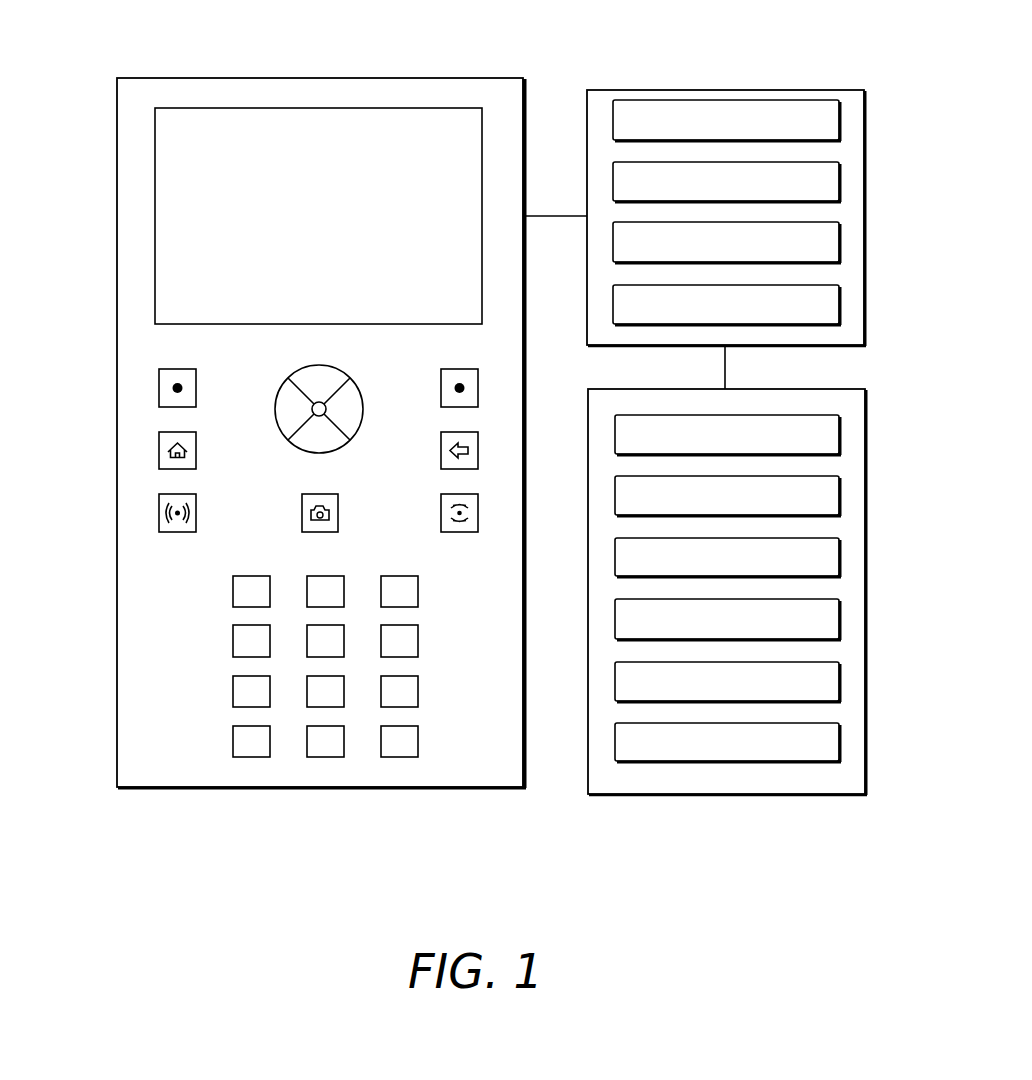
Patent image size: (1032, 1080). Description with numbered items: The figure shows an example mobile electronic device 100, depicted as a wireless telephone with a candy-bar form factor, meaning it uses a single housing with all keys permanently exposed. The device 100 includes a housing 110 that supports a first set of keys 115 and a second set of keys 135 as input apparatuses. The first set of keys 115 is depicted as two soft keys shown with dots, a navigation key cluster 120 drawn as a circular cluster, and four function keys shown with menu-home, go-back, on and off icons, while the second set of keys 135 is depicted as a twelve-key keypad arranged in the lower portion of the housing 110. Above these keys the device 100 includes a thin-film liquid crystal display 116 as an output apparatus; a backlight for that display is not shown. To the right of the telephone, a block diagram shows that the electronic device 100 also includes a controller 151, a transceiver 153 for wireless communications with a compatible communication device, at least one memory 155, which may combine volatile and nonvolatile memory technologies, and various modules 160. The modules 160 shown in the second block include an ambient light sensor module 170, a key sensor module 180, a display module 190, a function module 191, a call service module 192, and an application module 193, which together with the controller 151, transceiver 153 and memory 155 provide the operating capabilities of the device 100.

The electronic device 100 is at (104, 31).
The housing 110 is at (124, 193).
The first set of keys 115 is at (105, 368).
The thin-film liquid crystal display 116 is at (427, 283).
The navigation key cluster 120 is at (363, 409).
The second set of keys 135 is at (105, 563).
The controller 151 is at (841, 118).
The transceiver 153 is at (841, 180).
The memory 155 is at (841, 242).
The modules 160 is at (841, 304).
The ambient light sensor module 170 is at (841, 433).
The key sensor module 180 is at (841, 494).
The display module 190 is at (841, 556).
The function module 191 is at (841, 618).
The call service module 192 is at (841, 680).
The application module 193 is at (841, 741).